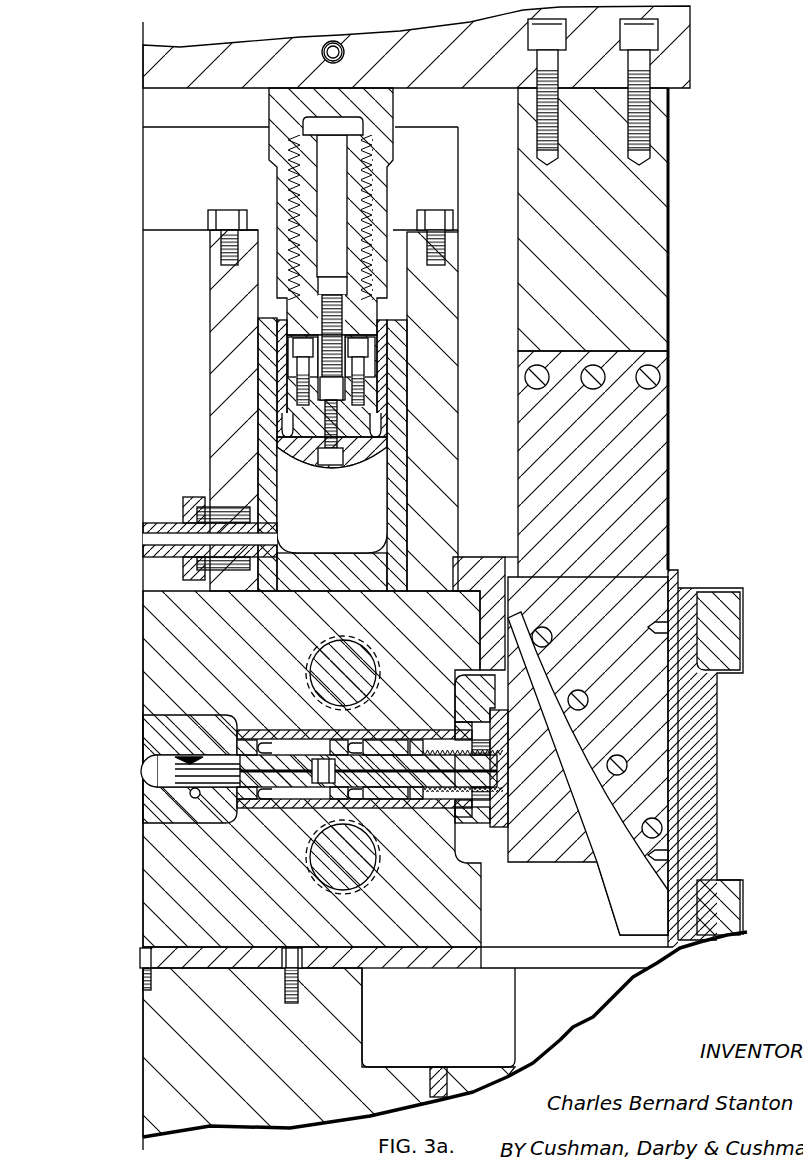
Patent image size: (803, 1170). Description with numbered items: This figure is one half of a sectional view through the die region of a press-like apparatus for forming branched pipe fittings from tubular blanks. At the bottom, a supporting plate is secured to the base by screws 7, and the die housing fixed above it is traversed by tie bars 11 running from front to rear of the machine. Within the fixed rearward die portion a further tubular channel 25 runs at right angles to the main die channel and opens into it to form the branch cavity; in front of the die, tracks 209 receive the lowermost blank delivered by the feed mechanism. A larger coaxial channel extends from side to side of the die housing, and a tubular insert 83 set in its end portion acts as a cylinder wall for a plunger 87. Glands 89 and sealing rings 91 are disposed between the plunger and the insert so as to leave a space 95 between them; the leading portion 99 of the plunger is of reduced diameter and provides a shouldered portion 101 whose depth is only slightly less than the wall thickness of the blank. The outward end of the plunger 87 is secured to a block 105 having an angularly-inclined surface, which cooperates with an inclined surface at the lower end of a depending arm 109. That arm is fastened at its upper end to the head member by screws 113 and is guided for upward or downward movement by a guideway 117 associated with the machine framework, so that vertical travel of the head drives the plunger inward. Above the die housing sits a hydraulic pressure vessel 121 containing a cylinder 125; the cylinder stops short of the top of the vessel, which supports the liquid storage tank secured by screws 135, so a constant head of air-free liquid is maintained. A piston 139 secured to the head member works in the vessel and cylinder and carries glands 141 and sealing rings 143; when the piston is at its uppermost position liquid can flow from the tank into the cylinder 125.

The screws 7 is at (147, 980).
The tie bars 11 is at (328, 662).
The further tubular channel 25 is at (143, 777).
The tubular insert 83 is at (413, 737).
The plunger 87 is at (472, 800).
The glands 89 is at (262, 736).
The sealing rings 91 is at (325, 740).
The space 95 is at (285, 793).
The leading portion 99 is at (193, 782).
The shouldered portion 101 is at (177, 763).
The block 105 is at (553, 852).
The depending arm 109 is at (650, 430).
The screws 113 is at (640, 118).
The guideway 117 is at (476, 560).
The hydraulic pressure vessel 121 is at (433, 334).
The cylinder 125 is at (403, 440).
The screws 135 is at (226, 216).
The piston 139 is at (352, 458).
The glands 141 is at (377, 407).
The sealing rings 143 is at (278, 425).
The tracks 209 is at (237, 807).